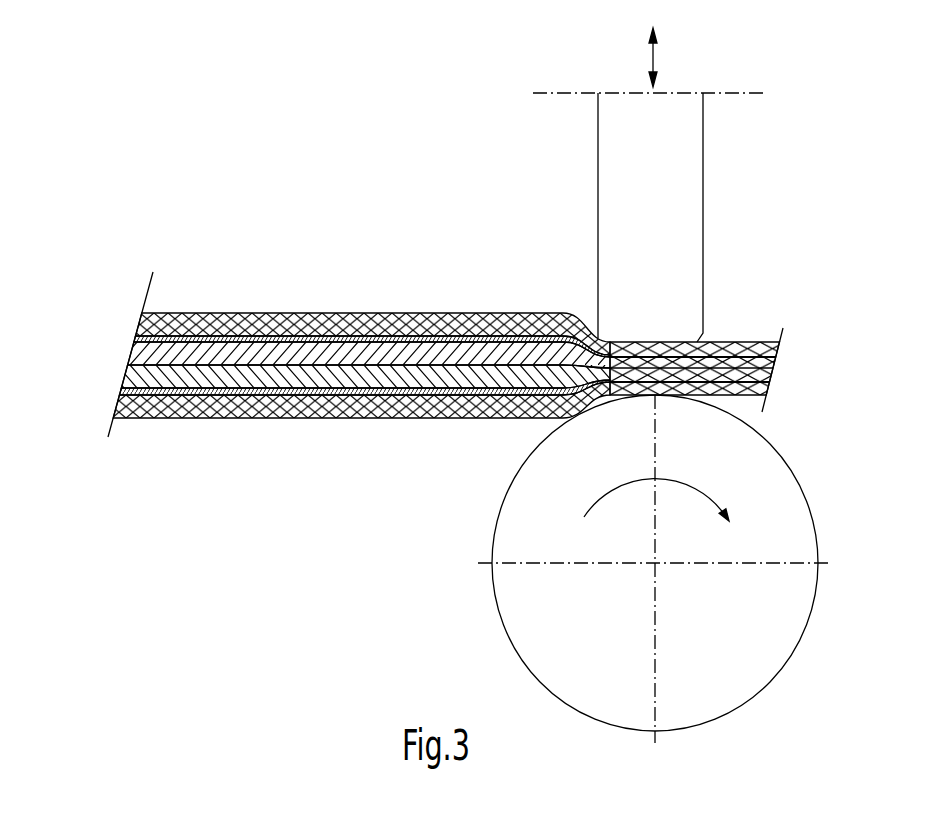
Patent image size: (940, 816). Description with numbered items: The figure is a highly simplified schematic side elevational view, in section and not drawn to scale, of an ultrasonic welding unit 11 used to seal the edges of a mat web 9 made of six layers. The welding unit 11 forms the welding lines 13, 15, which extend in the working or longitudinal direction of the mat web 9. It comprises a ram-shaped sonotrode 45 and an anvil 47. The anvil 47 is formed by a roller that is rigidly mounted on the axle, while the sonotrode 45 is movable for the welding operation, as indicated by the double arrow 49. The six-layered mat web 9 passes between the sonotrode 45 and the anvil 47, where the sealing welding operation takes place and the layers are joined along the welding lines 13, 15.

The mat web 9 is at (288, 313).
The welding unit 11 is at (762, 178).
The welding line 13 is at (757, 331).
The welding line 15 is at (727, 352).
The sonotrode 45 is at (623, 210).
The anvil 47 is at (537, 607).
The double arrow 49 is at (653, 55).